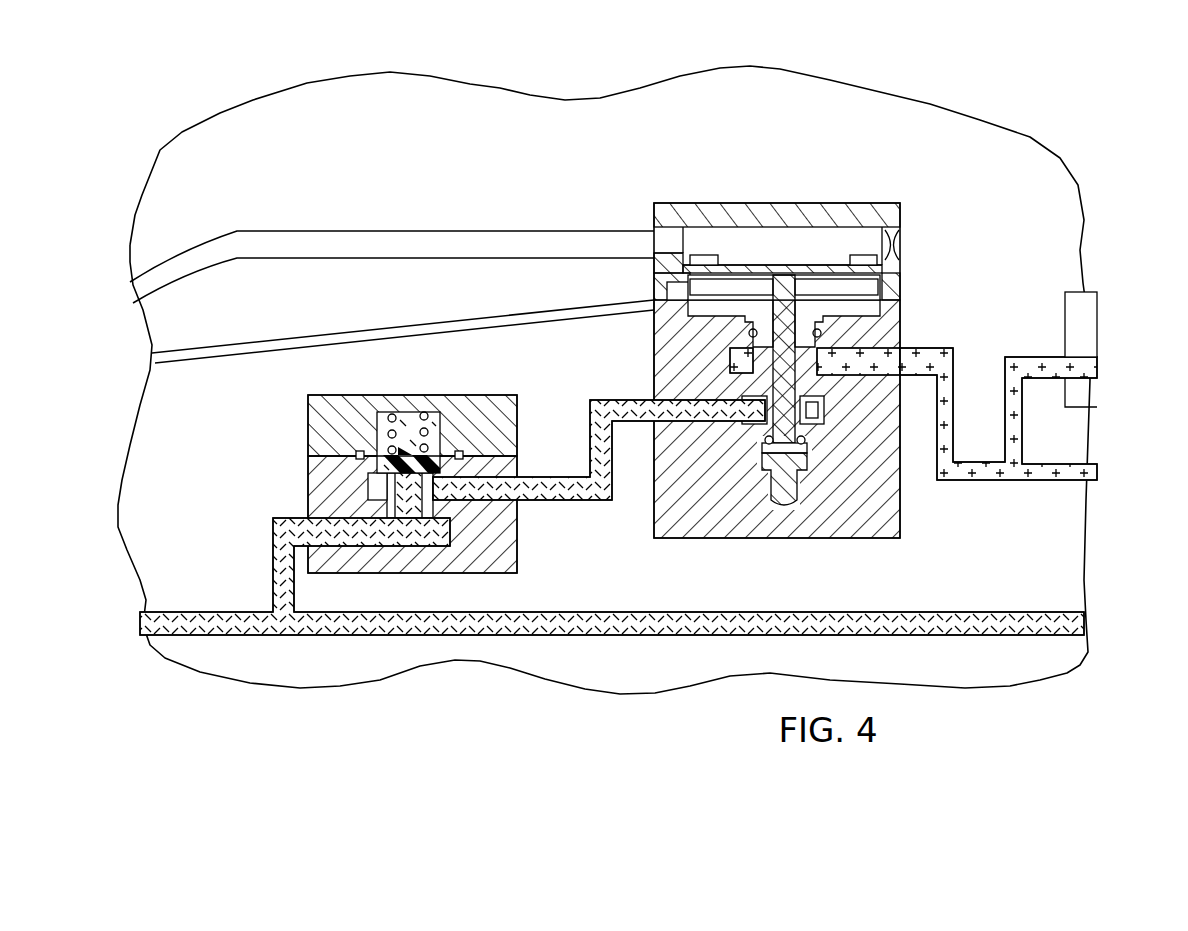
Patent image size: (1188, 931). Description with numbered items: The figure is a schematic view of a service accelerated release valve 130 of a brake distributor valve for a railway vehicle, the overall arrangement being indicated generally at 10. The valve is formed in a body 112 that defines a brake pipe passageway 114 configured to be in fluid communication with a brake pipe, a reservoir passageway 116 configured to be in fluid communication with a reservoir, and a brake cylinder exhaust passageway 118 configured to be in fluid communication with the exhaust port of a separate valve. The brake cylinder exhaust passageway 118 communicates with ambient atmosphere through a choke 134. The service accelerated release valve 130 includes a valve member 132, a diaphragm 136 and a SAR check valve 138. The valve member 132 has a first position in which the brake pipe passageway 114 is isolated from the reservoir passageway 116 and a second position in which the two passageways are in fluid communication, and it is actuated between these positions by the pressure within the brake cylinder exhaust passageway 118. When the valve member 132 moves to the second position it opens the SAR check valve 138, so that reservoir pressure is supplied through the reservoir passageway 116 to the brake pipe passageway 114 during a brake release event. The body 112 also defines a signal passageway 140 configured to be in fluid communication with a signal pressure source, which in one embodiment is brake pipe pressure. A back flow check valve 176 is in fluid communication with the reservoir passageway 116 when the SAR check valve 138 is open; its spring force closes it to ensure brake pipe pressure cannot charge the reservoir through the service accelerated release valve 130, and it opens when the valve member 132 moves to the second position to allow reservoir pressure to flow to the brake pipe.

The fluid dispensing system 10 is at (258, 168).
The body 112 is at (1028, 573).
The brake pipe passageway 114 is at (1065, 482).
The reservoir passageway 116 is at (552, 500).
The brake cylinder exhaust passageway 118 is at (490, 231).
The service accelerated release valve 130 is at (870, 328).
The valve member 132 is at (787, 275).
The choke 134 is at (893, 243).
The diaphragm 136 is at (752, 270).
The SAR check valve 138 is at (765, 440).
The signal passageway 140 is at (198, 363).
The back flow check valve 176 is at (438, 455).